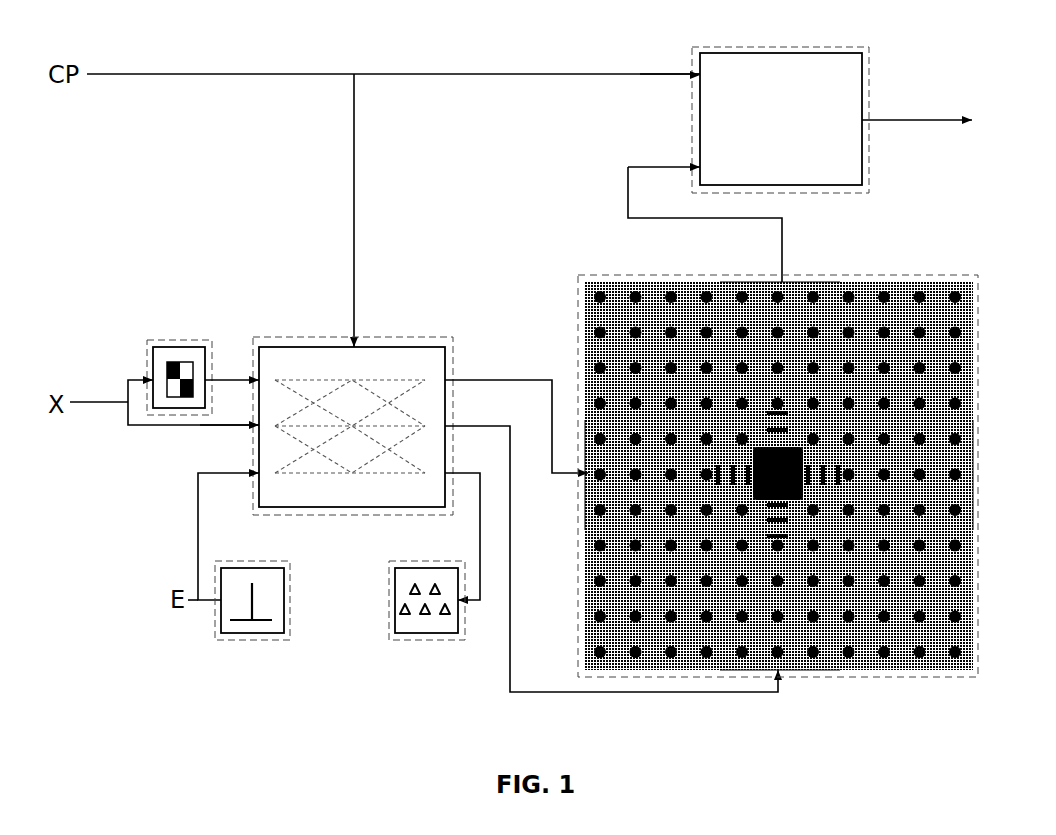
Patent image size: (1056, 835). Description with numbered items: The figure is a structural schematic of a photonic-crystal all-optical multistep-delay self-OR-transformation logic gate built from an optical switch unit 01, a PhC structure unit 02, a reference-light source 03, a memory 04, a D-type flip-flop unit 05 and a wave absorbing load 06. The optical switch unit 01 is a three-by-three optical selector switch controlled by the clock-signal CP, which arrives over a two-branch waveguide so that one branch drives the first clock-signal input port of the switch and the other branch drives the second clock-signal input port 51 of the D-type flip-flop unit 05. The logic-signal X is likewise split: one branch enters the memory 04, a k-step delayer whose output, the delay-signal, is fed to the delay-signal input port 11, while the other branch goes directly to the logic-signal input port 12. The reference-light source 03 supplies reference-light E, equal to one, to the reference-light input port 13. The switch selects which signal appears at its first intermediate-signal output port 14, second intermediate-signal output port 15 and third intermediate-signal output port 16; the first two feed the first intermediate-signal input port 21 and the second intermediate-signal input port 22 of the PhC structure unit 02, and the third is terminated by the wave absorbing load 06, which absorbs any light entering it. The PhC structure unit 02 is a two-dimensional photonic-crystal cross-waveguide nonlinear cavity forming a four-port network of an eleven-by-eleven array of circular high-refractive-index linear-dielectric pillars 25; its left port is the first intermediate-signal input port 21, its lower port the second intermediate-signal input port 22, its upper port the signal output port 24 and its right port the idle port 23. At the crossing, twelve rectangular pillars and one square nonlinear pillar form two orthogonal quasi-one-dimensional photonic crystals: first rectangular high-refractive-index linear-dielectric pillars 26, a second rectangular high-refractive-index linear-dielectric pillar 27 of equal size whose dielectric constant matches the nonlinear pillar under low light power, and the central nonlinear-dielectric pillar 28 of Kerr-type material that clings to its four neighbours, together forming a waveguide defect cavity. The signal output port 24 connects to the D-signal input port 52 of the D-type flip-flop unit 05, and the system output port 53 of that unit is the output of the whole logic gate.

The optical switch unit 01 is at (397, 337).
The PhC structure unit 02 is at (784, 472).
The reference-light source 03 is at (262, 643).
The memory 04 is at (187, 340).
The D-type flip-flop unit 05 is at (770, 47).
The wave absorbing load 06 is at (417, 643).
The delay-signal input port 11 is at (232, 364).
The logic-signal input port 12 is at (229, 410).
The reference-light input port 13 is at (228, 519).
The first intermediate-signal output port 14 is at (516, 415).
The second intermediate-signal output port 15 is at (613, 546).
The third intermediate-signal output port 16 is at (464, 526).
The first intermediate-signal input port 21 is at (592, 466).
The second intermediate-signal input port 22 is at (783, 653).
The idle port 23 is at (960, 473).
The signal output port 24 is at (780, 265).
The circular high-refractive-index linear-dielectric pillar 25 is at (815, 297).
The first rectangular high-refractive-index linear-dielectric pillar 26 is at (777, 410).
The second rectangular high-refractive-index linear-dielectric pillar 27 is at (795, 445).
The central nonlinear-dielectric pillar 28 is at (806, 455).
The second clock-signal input port 51 is at (670, 61).
The D-signal input port 52 is at (705, 208).
The system output port 53 is at (917, 106).